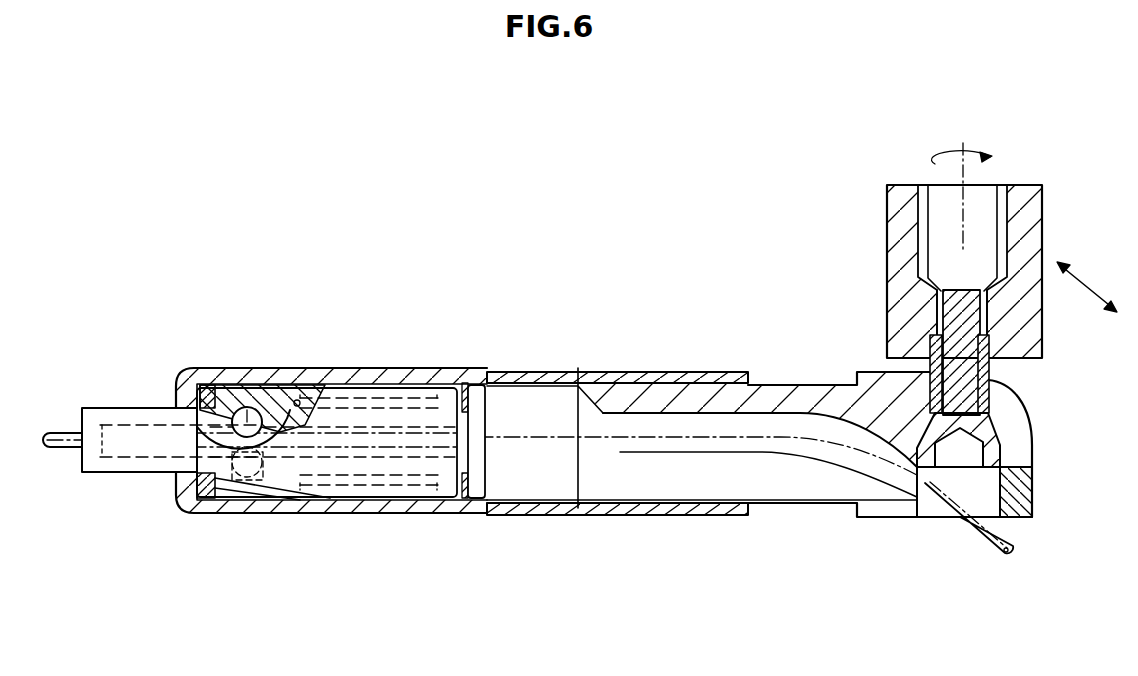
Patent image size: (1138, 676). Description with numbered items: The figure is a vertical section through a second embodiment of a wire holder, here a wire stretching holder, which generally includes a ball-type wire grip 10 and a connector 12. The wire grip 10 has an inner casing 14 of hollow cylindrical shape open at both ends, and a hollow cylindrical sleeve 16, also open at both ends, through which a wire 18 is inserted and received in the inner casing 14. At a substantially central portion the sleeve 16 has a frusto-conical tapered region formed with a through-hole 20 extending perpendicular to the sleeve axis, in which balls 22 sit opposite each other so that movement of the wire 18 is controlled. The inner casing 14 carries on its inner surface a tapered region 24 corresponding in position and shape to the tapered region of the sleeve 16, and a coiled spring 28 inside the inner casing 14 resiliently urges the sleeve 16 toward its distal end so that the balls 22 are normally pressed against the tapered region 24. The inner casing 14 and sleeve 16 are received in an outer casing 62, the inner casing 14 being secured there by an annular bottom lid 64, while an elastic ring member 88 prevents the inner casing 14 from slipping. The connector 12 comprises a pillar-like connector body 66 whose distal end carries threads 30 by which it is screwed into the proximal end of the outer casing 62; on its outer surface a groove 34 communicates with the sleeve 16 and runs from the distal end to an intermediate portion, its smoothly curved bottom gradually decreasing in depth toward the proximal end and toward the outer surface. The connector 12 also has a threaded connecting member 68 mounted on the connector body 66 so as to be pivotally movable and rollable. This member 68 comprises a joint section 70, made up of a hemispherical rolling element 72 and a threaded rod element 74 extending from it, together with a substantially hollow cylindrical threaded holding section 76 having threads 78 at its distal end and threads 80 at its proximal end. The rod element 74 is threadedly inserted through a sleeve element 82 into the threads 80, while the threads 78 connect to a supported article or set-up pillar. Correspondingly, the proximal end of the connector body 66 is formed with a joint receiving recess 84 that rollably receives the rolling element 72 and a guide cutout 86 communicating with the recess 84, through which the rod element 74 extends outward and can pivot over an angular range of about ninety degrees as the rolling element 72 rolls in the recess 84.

The ball-type wire grip 10 is at (253, 496).
The connector 12 is at (776, 370).
The inner casing 14 is at (323, 500).
The sleeve 16 is at (147, 410).
The wire 18 is at (63, 437).
The through-hole 20 is at (249, 417).
The balls 22 is at (247, 400).
The tapered region 24 is at (280, 500).
The spring 28 is at (303, 400).
The threads 30 is at (612, 505).
The groove 34 is at (803, 495).
The outer casing 62 is at (425, 375).
The bottom lid 64 is at (473, 500).
The connector body 66 is at (833, 390).
The threaded connecting member 68 is at (856, 236).
The joint section 70 is at (966, 457).
The hemispherical rolling element 72 is at (990, 428).
The threaded rod element 74 is at (992, 388).
The threaded holding section 76 is at (1042, 250).
The threads 78 is at (924, 204).
The threads 80 is at (978, 320).
The sleeve element 82 is at (990, 370).
The joint receiving recess 84 is at (990, 505).
The guide cutout 86 is at (1025, 460).
The elastic ring member 88 is at (203, 500).